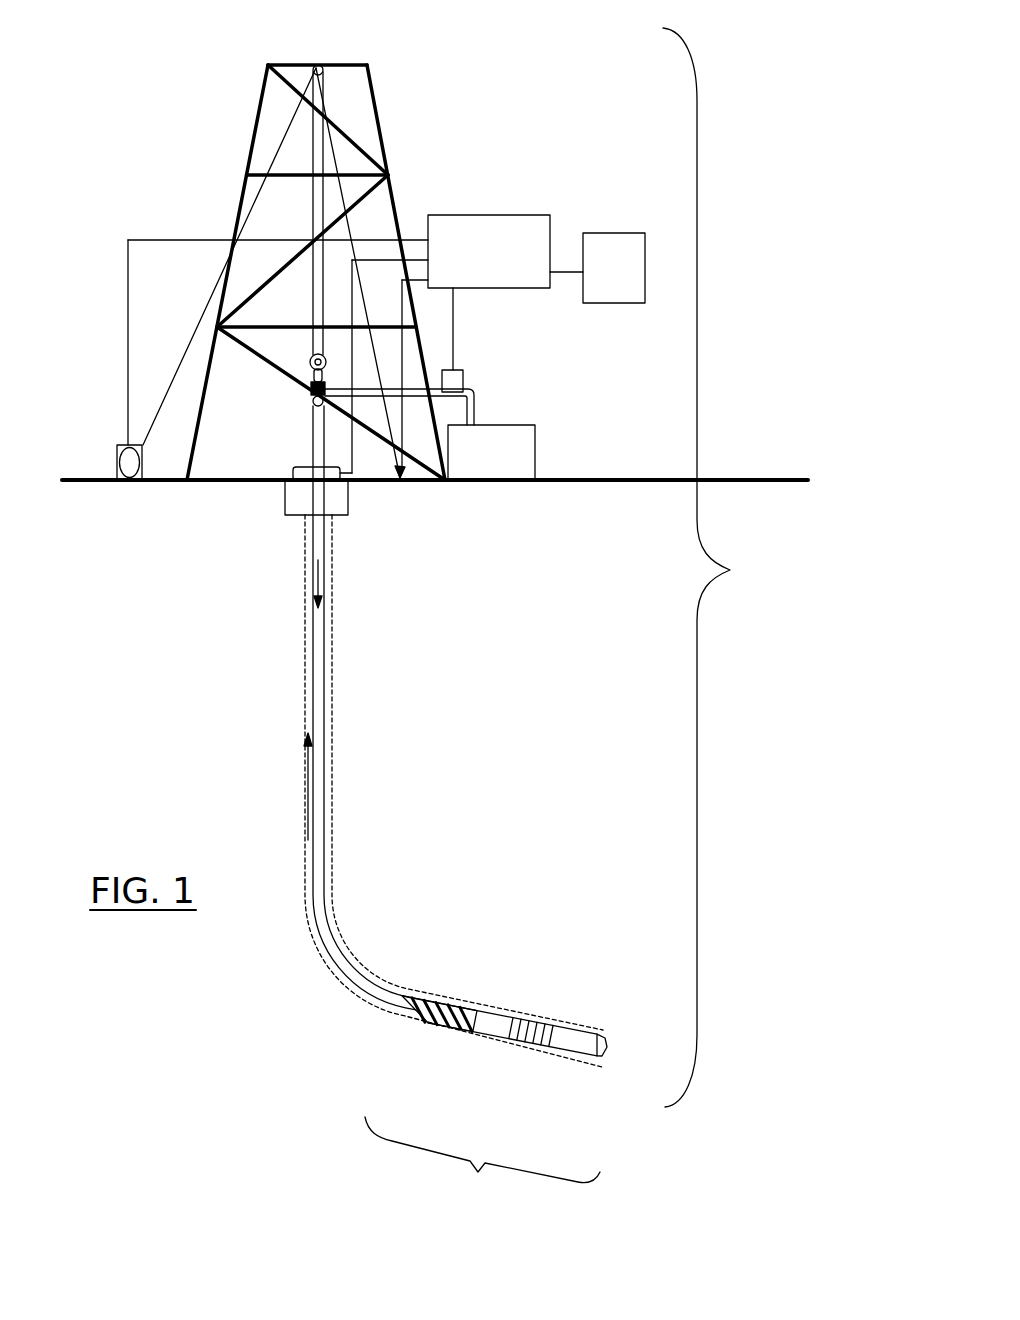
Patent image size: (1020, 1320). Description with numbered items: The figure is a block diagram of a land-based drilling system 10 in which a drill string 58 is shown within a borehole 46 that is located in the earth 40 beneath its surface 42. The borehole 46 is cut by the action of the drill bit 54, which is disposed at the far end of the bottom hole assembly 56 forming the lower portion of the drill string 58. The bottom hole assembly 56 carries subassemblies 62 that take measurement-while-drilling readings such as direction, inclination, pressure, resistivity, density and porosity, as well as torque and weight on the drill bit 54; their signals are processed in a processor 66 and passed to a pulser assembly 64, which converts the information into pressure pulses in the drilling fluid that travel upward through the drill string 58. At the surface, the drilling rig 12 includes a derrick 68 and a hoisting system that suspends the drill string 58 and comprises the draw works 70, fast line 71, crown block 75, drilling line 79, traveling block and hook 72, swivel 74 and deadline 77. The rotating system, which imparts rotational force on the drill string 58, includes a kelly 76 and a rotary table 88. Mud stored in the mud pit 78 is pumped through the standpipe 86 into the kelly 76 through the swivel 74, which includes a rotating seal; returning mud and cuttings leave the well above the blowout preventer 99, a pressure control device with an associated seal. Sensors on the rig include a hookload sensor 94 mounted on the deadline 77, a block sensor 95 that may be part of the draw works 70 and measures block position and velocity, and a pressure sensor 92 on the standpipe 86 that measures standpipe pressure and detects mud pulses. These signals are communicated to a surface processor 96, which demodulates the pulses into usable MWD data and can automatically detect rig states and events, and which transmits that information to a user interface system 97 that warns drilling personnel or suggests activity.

The drilling system 10 is at (718, 567).
The drilling rig 12 is at (175, 106).
The earth 40 is at (512, 621).
The surface 42 is at (589, 483).
The borehole 46 is at (304, 622).
The drill bit 54 is at (607, 1046).
The bottom hole assembly 56 is at (482, 1118).
The drill string 58 is at (326, 622).
The subassemblies 62 is at (533, 1030).
The pulser assembly 64 is at (420, 1032).
The processor 66 is at (447, 1018).
The derrick 68 is at (388, 177).
The draw works 70 is at (117, 446).
The fast line 71 is at (187, 358).
The traveling block and hook 72 is at (308, 364).
The swivel 74 is at (309, 394).
The crown block 75 is at (315, 63).
The kelly 76 is at (311, 442).
The deadline 77 is at (390, 429).
The mud pit 78 is at (506, 469).
The drilling line 79 is at (303, 205).
The standpipe 86 is at (476, 393).
The rotary table 88 is at (282, 481).
The pressure sensor 92 is at (457, 368).
The hookload sensor 94 is at (413, 475).
The block sensor 95 is at (140, 483).
The surface processor 96 is at (501, 261).
The user interface system 97 is at (626, 294).
The blowout preventer 99 is at (292, 509).